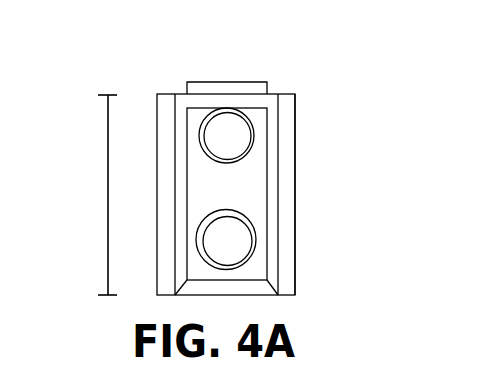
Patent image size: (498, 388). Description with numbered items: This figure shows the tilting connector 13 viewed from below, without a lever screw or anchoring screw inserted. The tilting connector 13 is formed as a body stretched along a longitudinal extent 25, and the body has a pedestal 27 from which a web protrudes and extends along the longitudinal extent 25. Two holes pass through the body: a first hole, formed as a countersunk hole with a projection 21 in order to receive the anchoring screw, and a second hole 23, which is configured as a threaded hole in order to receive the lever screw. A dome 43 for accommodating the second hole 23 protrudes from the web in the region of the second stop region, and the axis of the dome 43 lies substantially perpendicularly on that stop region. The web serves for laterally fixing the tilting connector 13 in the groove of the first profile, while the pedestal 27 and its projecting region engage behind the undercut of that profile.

The tilting connector 13 is at (327, 153).
The projection 21 is at (245, 243).
The second hole 23 is at (223, 133).
The longitudinal extent 25 is at (110, 202).
The pedestal 27 is at (295, 168).
The dome 43 is at (232, 81).